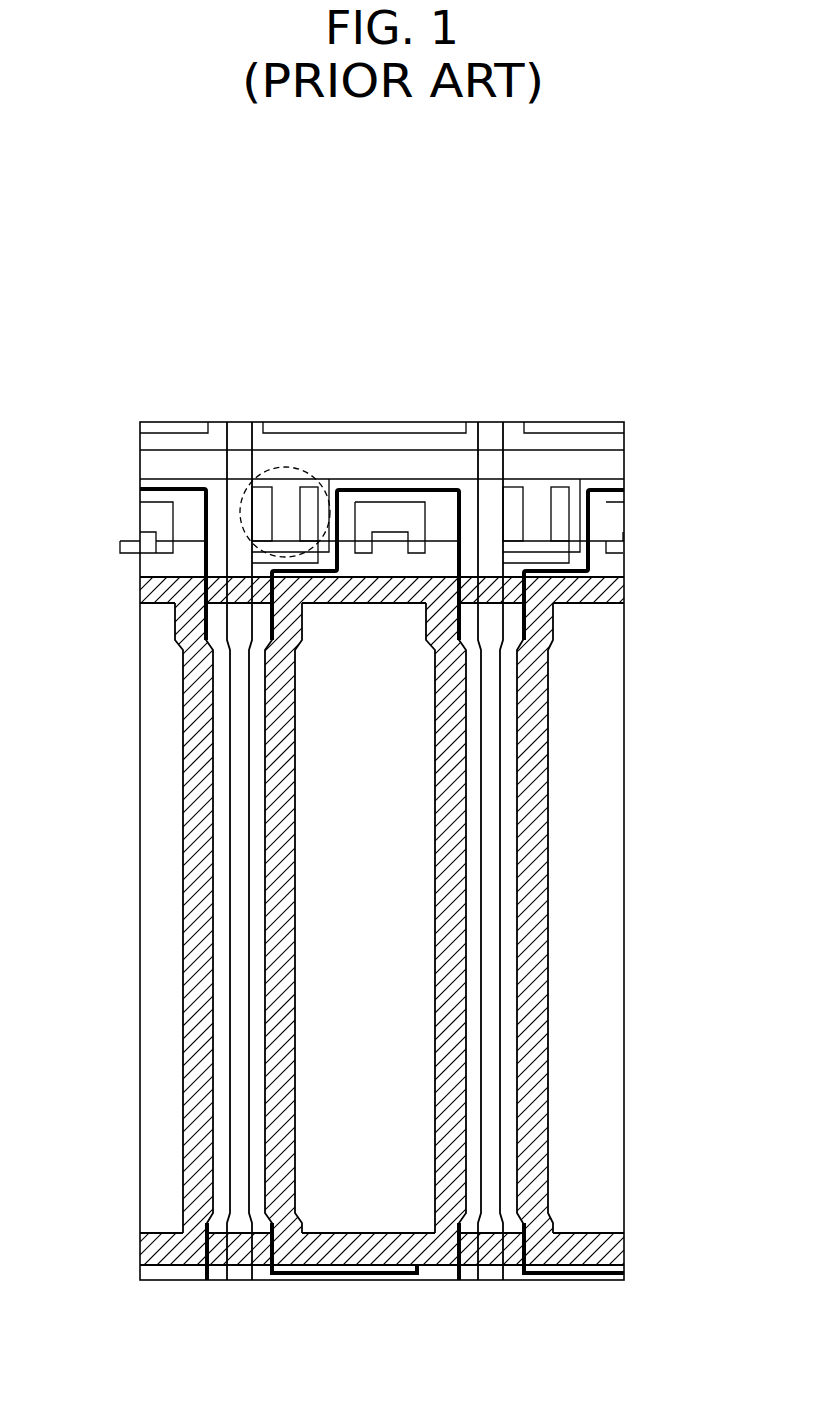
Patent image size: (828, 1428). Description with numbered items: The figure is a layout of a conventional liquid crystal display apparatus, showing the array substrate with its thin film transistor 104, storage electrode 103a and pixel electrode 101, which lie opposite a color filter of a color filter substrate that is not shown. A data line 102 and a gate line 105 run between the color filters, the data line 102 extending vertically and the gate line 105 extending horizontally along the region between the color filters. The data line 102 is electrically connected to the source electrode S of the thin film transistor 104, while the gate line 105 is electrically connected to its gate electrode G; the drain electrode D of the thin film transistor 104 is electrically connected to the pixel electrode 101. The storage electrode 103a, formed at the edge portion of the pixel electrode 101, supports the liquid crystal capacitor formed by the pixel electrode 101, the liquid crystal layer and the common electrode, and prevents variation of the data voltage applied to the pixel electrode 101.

The pixel electrode 101 is at (427, 1045).
The data line 102 is at (240, 1098).
The storage electrode 103a is at (208, 923).
The thin film transistor 104 is at (326, 470).
The gate line 105 is at (600, 462).
The source electrode S is at (260, 492).
The gate electrode G is at (285, 530).
The drain electrode D is at (313, 503).